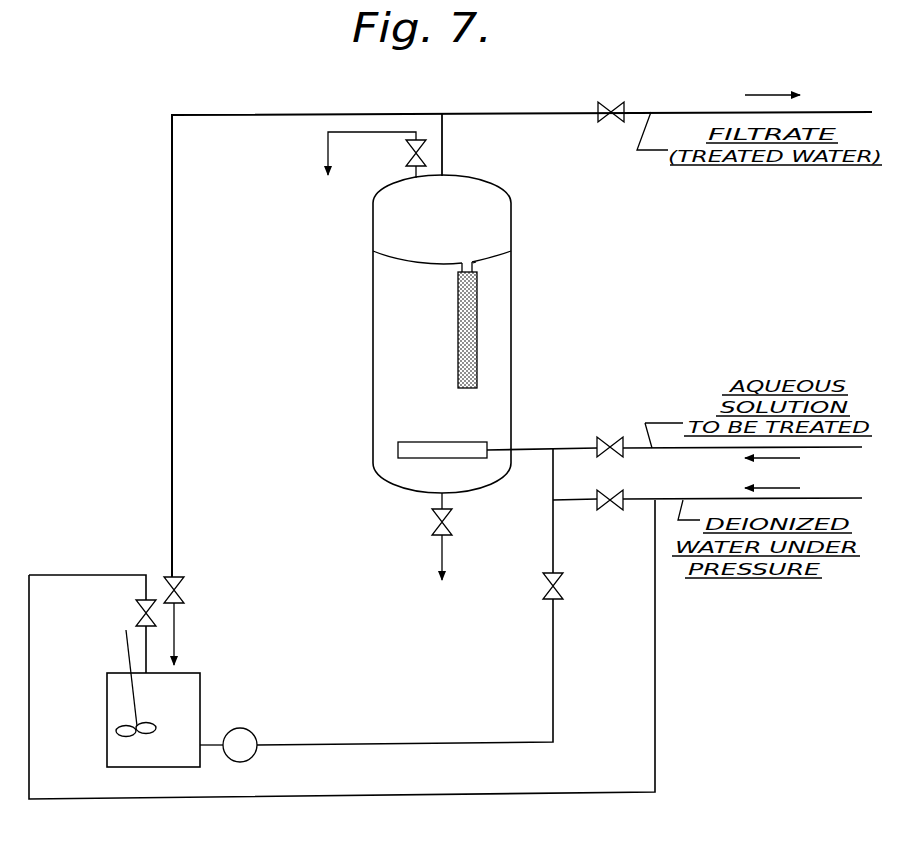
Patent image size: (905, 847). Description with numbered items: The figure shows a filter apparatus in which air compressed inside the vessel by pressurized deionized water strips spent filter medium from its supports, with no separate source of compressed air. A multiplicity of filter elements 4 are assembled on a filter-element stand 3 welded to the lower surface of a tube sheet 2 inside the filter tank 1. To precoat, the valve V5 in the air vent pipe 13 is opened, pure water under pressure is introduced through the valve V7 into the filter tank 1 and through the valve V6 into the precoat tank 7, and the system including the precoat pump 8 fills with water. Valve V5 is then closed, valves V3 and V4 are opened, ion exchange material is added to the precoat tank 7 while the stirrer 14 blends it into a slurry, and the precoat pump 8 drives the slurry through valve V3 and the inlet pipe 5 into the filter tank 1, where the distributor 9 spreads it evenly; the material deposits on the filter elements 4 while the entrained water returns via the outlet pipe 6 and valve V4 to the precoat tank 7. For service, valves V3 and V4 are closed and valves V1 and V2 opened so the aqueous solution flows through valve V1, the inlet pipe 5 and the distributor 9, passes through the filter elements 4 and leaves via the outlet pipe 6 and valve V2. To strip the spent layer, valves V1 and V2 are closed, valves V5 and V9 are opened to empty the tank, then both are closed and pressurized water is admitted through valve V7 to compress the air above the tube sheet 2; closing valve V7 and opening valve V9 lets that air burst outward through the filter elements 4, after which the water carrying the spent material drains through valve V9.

The filter tank 1 is at (373, 363).
The tube sheet 2 is at (393, 255).
The filter-element stand 3 is at (475, 263).
The filter elements 4 is at (478, 333).
The inlet pipe 5 is at (536, 448).
The outlet pipe 6 is at (448, 146).
The precoat tank 7 is at (200, 697).
The precoat pump 8 is at (254, 734).
The distributor 9 is at (399, 442).
The air vent pipe 13 is at (412, 158).
The stirrer 14 is at (128, 651).
The valve V1 is at (610, 438).
The valve V2 is at (606, 107).
The valve V3 is at (563, 586).
The valve V4 is at (184, 590).
The valve V5 is at (422, 160).
The valve V6 is at (136, 609).
The valve V7 is at (612, 486).
The valve V9 is at (453, 521).